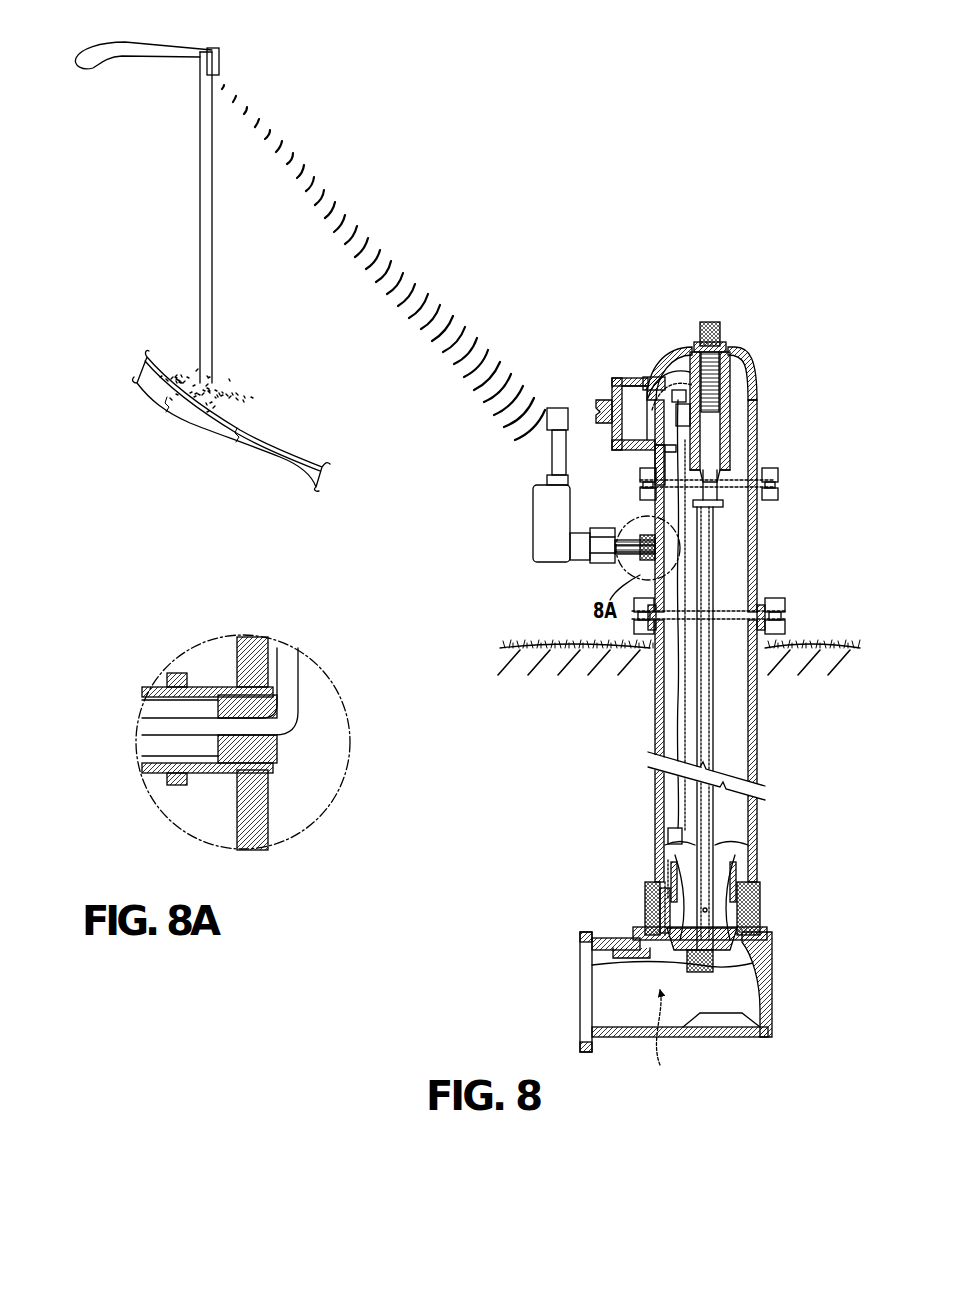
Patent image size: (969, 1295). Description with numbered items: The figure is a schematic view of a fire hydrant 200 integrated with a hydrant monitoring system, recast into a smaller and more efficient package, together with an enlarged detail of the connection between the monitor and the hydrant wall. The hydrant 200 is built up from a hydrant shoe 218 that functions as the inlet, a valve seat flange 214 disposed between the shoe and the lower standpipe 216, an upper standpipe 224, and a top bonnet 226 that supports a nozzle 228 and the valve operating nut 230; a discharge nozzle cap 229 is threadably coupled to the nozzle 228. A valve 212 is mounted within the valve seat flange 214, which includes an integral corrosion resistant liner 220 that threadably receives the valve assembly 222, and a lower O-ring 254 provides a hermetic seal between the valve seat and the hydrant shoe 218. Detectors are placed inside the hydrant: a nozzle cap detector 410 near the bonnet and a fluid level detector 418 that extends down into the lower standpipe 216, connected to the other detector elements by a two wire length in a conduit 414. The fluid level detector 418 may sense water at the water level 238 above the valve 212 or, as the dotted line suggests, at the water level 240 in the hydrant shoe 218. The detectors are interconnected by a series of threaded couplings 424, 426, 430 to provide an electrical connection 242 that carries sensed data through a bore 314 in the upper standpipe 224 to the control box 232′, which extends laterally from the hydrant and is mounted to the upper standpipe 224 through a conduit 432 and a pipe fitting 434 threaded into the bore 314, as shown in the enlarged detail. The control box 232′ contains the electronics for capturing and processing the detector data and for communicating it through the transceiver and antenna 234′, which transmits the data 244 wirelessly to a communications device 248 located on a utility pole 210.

In FIG. 8, the hydrant 200 is at (748, 282).
In FIG. 8, the utility pole 210 is at (182, 42).
In FIG. 8, the valve 212 is at (745, 866).
In FIG. 8, the valve seat flange 214 is at (765, 903).
In FIG. 8, the lower standpipe 216 is at (760, 700).
In FIG. 8, the hydrant shoe 218 is at (770, 1010).
In FIG. 8, the integral liner 220 is at (662, 912).
In FIG. 8, the valve assembly 222 is at (662, 883).
In FIG. 8, the upper standpipe 224 is at (758, 540).
In FIG. 8A, the upper standpipe 224 is at (240, 790).
In FIG. 8, the top bonnet 226 is at (760, 400).
In FIG. 8, the nozzle 228 is at (655, 445).
In FIG. 8, the discharge nozzle cap 229 is at (615, 390).
In FIG. 8, the valve operating nut 230 is at (727, 340).
In FIG. 8, the control box 232′ is at (531, 552).
In FIG. 8, the transceiver and antenna 234′ is at (548, 448).
In FIG. 8, the water level 238 is at (723, 853).
In FIG. 8, the water level 240 is at (610, 968).
In FIG. 8, the electrical connection 242 is at (628, 558).
In FIG. 8A, the electrical connection 242 is at (298, 685).
In FIG. 8, the data 244 is at (412, 268).
In FIG. 8, the communications device 248 is at (228, 66).
In FIG. 8, the lower O-ring 254 is at (757, 935).
In FIG. 8A, the bore 314 is at (172, 680).
In FIG. 8, the nozzle cap detector 410 is at (646, 377).
In FIG. 8, the conduit 414 is at (690, 530).
In FIG. 8, the fluid level detector 418 is at (672, 830).
In FIG. 8, the threaded coupling 424 is at (680, 388).
In FIG. 8, the threaded coupling 426 is at (690, 407).
In FIG. 8, the threaded coupling 430 is at (660, 382).
In FIG. 8, the conduit 432 is at (625, 560).
In FIG. 8A, the conduit 432 is at (150, 700).
In FIG. 8, the pipe fitting 434 is at (650, 540).
In FIG. 8A, the pipe fitting 434 is at (210, 770).